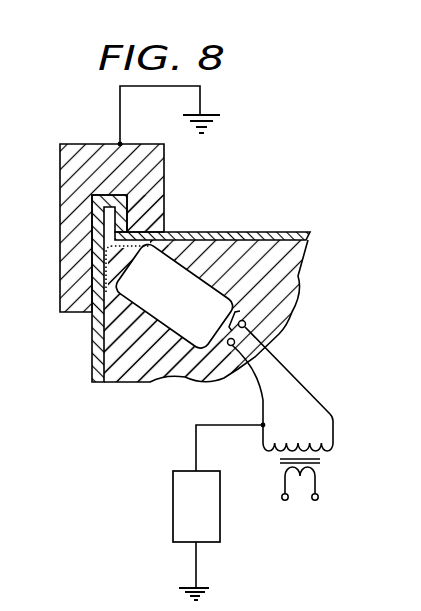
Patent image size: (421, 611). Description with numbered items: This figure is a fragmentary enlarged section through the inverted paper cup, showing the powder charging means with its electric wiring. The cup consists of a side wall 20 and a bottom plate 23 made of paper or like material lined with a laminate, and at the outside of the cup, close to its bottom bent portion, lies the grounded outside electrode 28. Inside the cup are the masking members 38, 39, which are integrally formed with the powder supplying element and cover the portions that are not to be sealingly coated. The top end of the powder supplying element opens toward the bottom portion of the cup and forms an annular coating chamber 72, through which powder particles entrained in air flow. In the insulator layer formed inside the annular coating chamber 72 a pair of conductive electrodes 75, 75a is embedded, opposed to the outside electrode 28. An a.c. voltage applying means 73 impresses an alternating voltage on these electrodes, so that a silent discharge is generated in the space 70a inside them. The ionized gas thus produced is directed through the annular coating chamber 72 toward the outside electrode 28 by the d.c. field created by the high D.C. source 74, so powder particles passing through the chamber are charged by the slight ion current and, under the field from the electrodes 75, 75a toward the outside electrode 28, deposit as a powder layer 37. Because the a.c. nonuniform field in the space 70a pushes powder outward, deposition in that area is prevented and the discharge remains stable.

The electrode 28 is at (90, 147).
The powder layer 37 is at (157, 200).
The side wall 20 is at (101, 331).
The masking member 38 is at (293, 266).
The masking member 39 is at (125, 367).
The bottom plate 23 is at (278, 232).
The annular coating chamber 72 is at (177, 268).
The space 70a is at (211, 314).
The conductive electrode 75 is at (246, 325).
The conductive electrode 75a is at (232, 347).
The a.c. voltage applying means 73 is at (328, 462).
The high D.C. source 74 is at (183, 499).